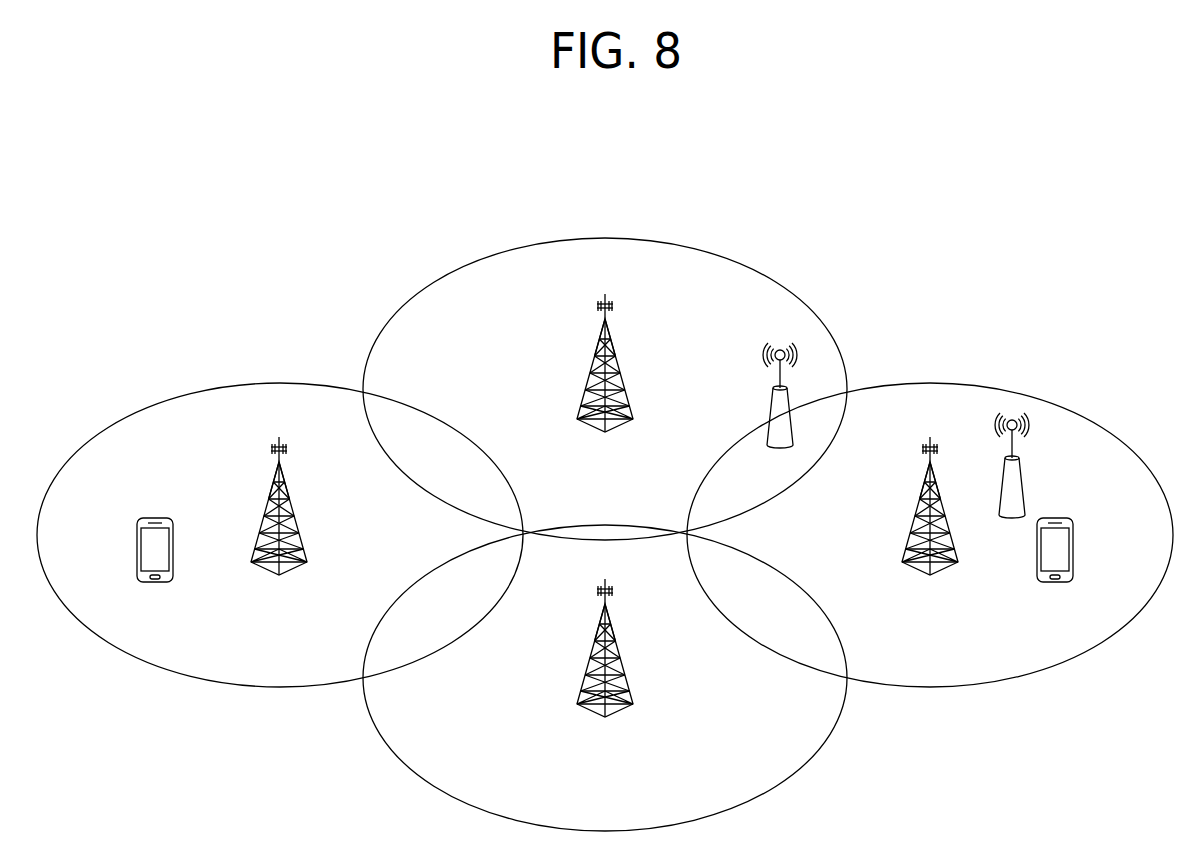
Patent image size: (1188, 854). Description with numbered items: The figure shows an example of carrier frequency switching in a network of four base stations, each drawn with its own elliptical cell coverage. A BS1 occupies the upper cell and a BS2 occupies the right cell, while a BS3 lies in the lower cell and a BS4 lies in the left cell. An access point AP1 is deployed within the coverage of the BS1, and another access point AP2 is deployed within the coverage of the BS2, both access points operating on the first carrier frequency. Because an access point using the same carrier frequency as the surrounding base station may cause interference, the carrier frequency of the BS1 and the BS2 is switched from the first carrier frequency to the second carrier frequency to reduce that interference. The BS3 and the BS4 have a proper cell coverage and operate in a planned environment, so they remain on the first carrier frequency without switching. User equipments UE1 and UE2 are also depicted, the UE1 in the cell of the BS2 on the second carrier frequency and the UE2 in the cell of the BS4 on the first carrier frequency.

The base station BS1 is at (605, 396).
The base station BS2 is at (930, 539).
The base station BS3 is at (605, 680).
The base station BS4 is at (279, 539).
The access point AP1 is at (752, 395).
The access point AP2 is at (1036, 465).
The user equipment 1 (frequency f2) UE1 is at (1055, 582).
The user equipment 2 (frequency f1) UE2 is at (153, 582).